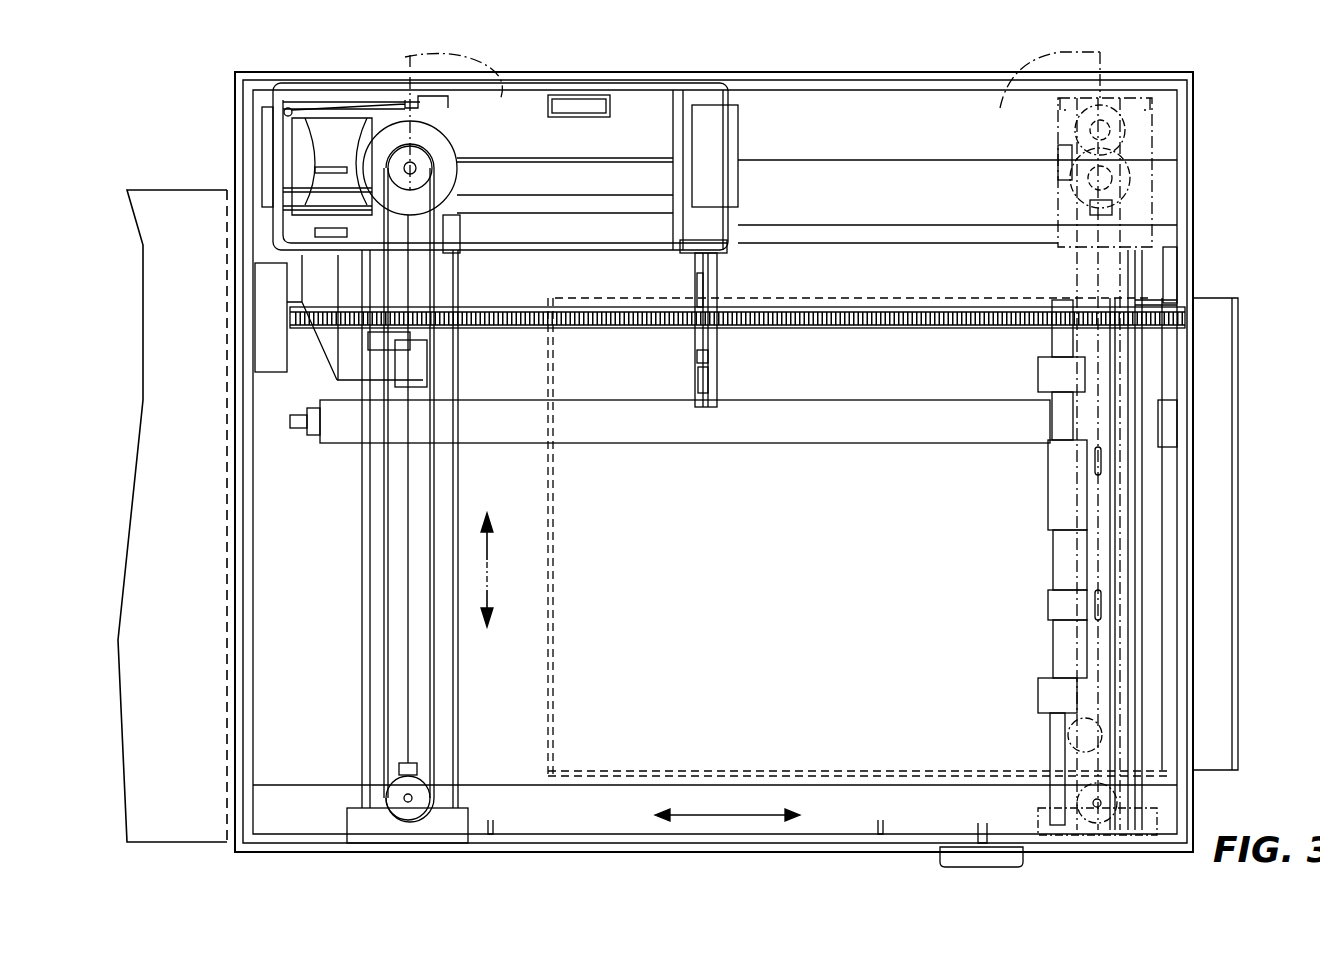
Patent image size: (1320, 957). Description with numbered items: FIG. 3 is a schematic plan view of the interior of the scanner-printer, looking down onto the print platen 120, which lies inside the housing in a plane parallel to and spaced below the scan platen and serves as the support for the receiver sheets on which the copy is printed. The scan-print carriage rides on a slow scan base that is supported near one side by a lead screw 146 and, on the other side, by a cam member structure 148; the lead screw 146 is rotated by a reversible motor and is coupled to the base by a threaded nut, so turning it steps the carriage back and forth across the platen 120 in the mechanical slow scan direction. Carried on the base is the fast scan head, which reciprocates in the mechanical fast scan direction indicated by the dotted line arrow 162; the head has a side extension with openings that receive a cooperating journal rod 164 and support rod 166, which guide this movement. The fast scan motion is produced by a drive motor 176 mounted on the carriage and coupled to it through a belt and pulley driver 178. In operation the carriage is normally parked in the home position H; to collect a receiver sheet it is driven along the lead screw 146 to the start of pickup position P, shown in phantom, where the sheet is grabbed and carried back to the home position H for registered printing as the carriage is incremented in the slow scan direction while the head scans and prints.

The print platen 120 is at (893, 645).
The lead screw 146 is at (513, 328).
The cam member structure 148 is at (622, 406).
The dotted line arrow 162 is at (495, 578).
The journal rod 164 is at (363, 577).
The support rod 166 is at (456, 680).
The drive motor 176 is at (460, 156).
The belt and pulley driver 178 is at (392, 292).
The home position H is at (500, 153).
The start of pickup position P is at (1070, 149).